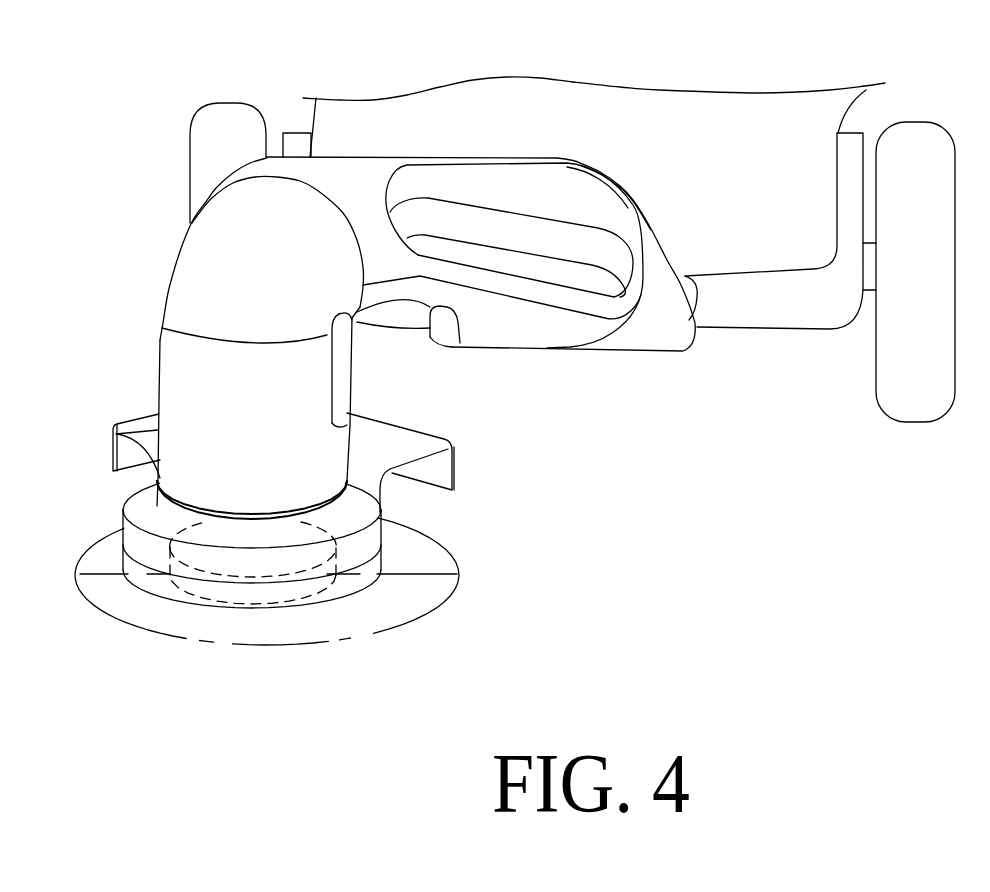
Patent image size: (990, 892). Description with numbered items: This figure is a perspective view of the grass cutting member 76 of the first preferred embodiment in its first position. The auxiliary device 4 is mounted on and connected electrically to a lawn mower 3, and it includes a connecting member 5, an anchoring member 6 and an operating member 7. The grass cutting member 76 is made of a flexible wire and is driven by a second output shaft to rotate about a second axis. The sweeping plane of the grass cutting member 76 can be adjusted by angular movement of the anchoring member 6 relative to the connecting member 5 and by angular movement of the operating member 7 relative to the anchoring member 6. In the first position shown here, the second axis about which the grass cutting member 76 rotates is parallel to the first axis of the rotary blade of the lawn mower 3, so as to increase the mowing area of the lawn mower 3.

The lawn mower 3 is at (815, 113).
The auxiliary device 4 is at (168, 280).
The connecting member 5 is at (658, 307).
The anchoring member 6 is at (420, 275).
The operating member 7 is at (207, 424).
The grass cutting member 76 is at (410, 575).